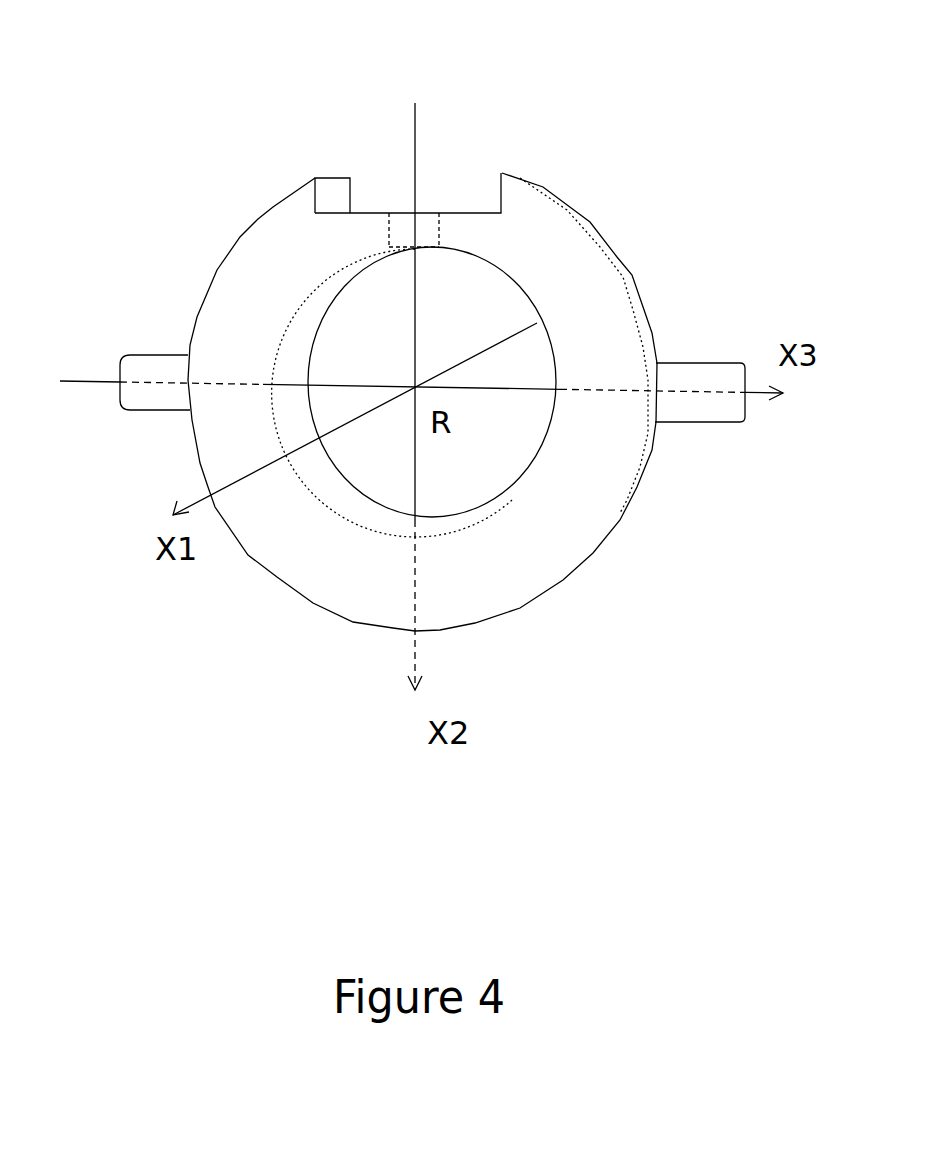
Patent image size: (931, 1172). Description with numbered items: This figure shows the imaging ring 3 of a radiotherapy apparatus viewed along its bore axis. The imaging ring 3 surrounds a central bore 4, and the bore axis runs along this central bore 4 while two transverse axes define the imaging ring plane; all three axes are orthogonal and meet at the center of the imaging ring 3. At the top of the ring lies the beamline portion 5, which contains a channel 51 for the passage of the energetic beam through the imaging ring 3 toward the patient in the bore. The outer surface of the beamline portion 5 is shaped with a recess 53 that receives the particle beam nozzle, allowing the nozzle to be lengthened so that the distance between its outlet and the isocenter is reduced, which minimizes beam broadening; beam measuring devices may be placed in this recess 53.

The imaging ring 3 is at (538, 555).
The central bore 4 is at (382, 369).
The beamline portion 5 is at (478, 226).
The channel 51 is at (402, 232).
The recess 53 is at (362, 193).